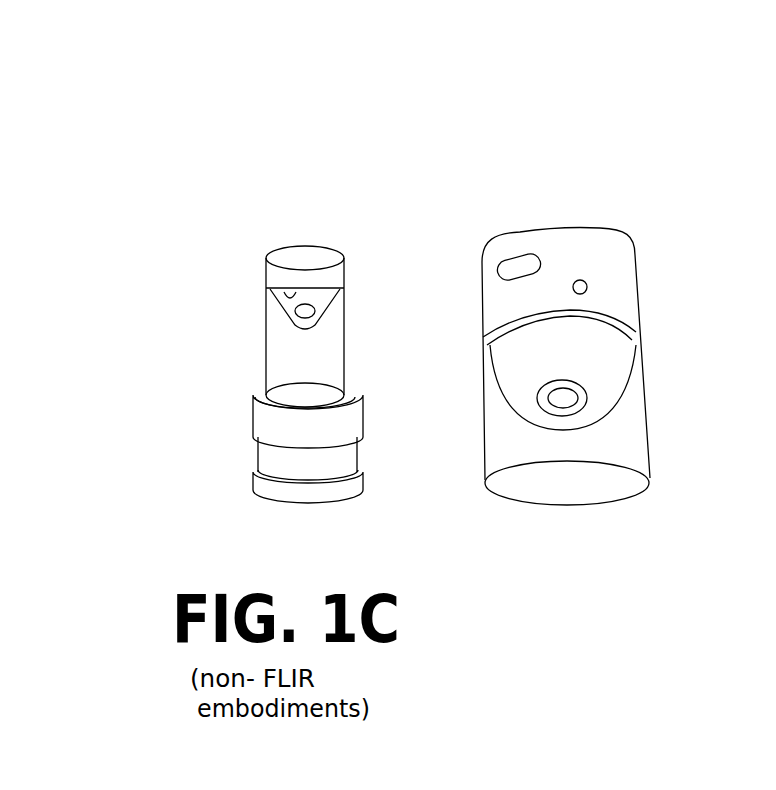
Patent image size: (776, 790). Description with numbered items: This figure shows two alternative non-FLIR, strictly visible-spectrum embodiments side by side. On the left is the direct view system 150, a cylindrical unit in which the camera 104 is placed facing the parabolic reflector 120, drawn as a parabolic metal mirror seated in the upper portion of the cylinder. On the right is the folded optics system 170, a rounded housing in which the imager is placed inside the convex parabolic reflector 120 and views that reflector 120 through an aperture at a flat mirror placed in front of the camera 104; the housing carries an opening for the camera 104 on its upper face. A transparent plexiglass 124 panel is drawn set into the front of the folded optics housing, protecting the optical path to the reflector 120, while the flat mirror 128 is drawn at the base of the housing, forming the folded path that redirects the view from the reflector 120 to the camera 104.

The direct view system 150 is at (252, 232).
The parabolic reflector 120 is at (520, 358).
The camera 104 is at (608, 265).
The folded optics system 170 is at (626, 196).
The plexiglass 124 is at (320, 338).
The flat mirror 128 is at (577, 482).